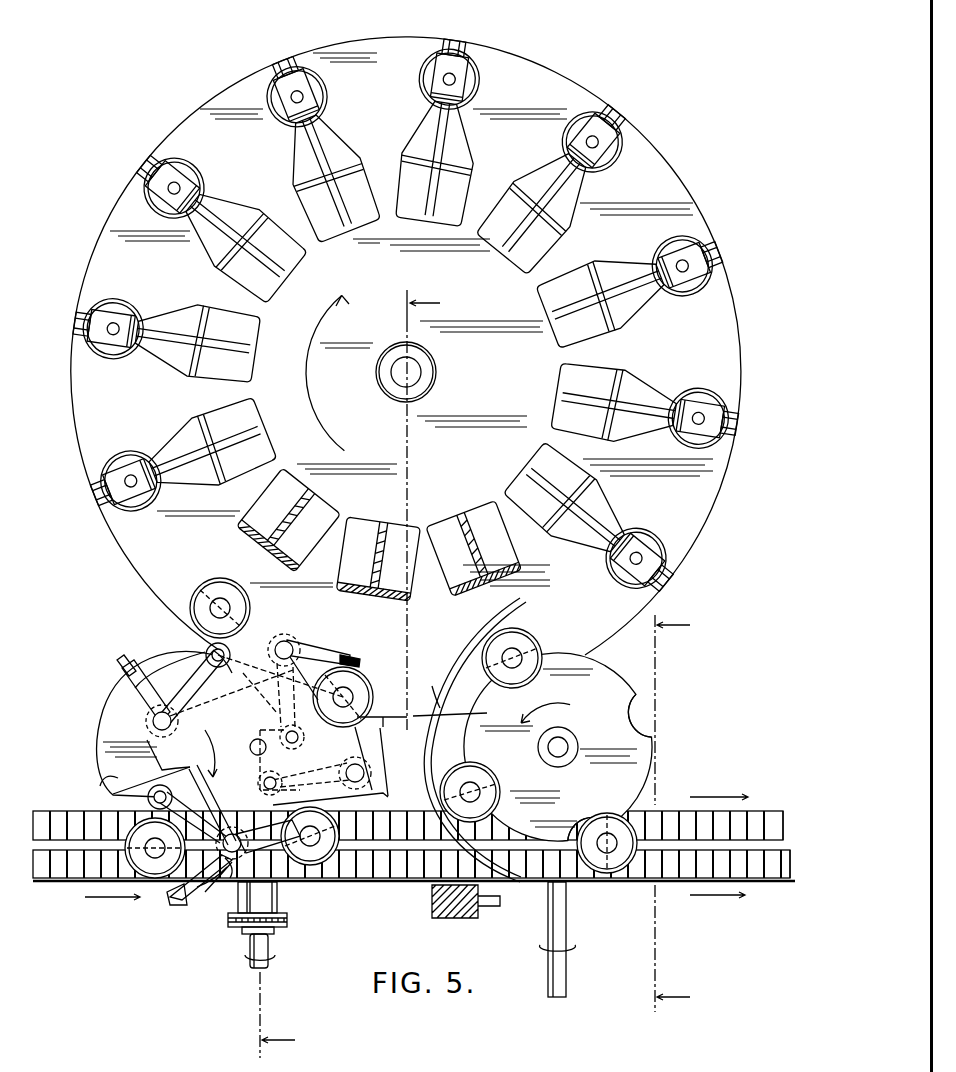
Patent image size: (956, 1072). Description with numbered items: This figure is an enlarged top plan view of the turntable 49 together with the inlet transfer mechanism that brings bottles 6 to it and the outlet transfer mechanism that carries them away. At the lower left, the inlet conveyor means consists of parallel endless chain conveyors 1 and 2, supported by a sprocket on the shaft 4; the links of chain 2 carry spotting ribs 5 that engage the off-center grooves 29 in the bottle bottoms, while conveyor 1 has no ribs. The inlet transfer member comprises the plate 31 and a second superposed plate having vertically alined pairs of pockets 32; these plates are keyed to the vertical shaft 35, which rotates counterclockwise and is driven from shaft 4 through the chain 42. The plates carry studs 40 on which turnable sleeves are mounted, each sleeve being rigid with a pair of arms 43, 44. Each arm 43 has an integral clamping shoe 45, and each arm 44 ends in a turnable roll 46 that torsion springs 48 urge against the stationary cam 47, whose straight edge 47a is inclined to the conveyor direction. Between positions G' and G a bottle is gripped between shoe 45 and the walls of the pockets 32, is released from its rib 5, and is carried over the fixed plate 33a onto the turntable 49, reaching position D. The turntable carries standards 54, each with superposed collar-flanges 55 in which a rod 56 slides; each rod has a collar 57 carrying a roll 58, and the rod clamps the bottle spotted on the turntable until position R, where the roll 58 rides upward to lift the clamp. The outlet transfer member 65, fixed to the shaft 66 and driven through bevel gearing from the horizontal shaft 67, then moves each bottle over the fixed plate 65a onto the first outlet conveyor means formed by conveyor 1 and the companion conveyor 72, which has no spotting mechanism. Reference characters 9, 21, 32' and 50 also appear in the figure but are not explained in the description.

The endless chain conveyor 1 is at (53, 808).
The endless chain conveyor 2 is at (46, 884).
The shaft 4 is at (272, 958).
The spotting ribs 5 is at (66, 860).
The bottles 6 is at (621, 826).
The section line 9 is at (679, 812).
The curved guide 21 is at (464, 646).
The grooves 29 is at (222, 585).
The plate 31 is at (253, 648).
The pockets 32 is at (233, 751).
The cam notches 32' is at (561, 767).
The fixed plate 33a is at (395, 713).
The vertical shaft 35 is at (250, 747).
The studs 40 is at (292, 645).
The chain 42 is at (296, 924).
The arm 43 is at (134, 688).
The arm 44 is at (196, 682).
The clamping shoe 45 is at (125, 657).
The roll 46 is at (206, 655).
The stationary cam 47 is at (104, 724).
The straight edge 47a is at (102, 785).
The torsion springs 48 is at (286, 640).
The turntable 49 is at (722, 498).
The hub 50 is at (412, 375).
The standards 54 is at (546, 168).
The collar-flanges 55 is at (430, 77).
The rod 56 is at (458, 78).
The collar 57 is at (438, 64).
The roll 58 is at (458, 58).
The outlet transfer member 65 is at (600, 690).
The fixed plate 65a is at (423, 687).
The shaft 66 is at (566, 740).
The horizontal shaft 67 is at (566, 930).
The companion conveyor 72 is at (768, 884).